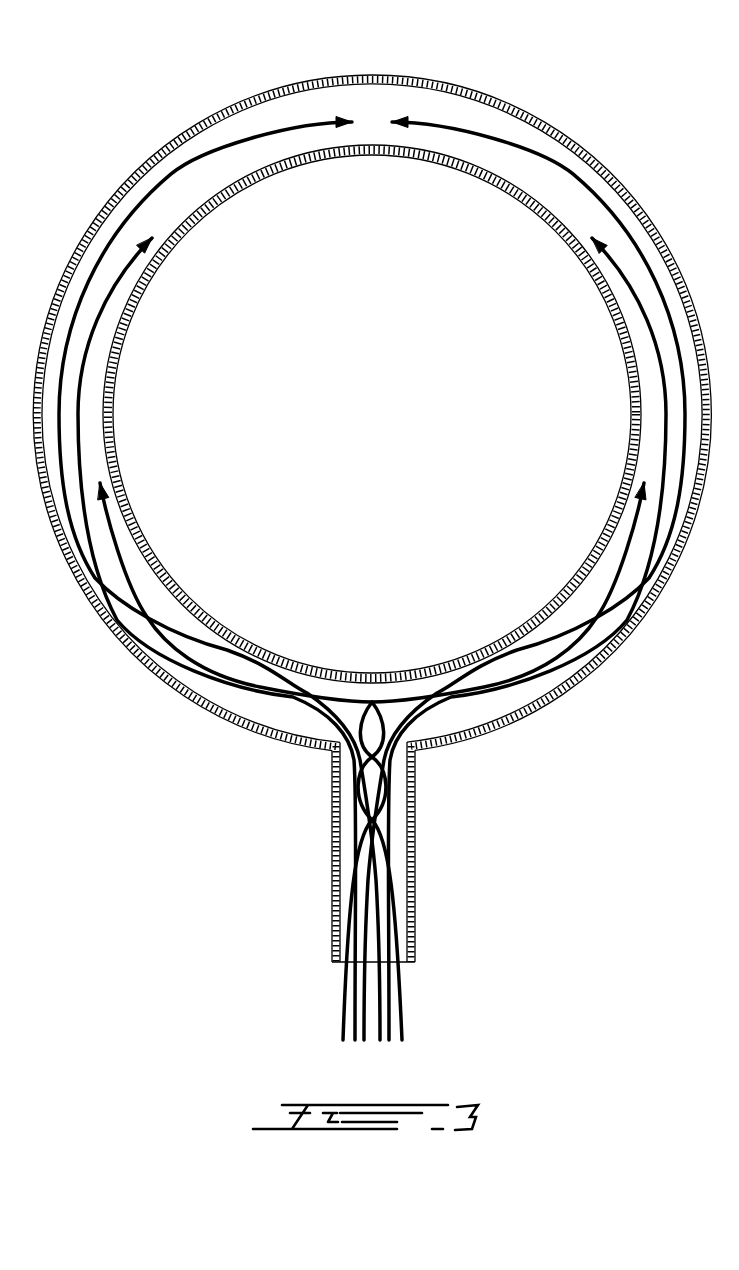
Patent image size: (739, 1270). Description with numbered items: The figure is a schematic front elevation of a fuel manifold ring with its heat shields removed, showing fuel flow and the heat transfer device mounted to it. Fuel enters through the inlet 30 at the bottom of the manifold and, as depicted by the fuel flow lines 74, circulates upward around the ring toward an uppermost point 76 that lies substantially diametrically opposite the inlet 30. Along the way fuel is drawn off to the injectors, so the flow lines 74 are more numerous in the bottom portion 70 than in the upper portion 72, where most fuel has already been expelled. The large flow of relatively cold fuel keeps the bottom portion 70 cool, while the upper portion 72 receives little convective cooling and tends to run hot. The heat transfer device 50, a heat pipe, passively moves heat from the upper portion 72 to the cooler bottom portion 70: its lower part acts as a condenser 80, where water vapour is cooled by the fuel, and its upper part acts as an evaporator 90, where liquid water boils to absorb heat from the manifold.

The inlet 30 is at (332, 910).
The heat transfer device 50 is at (85, 605).
The bottom portion 70 is at (317, 760).
The upper portion 72 is at (222, 215).
The fuel flow lines 74 is at (527, 688).
The uppermost point 76 is at (372, 120).
The condenser 80 is at (428, 750).
The evaporator 90 is at (372, 75).